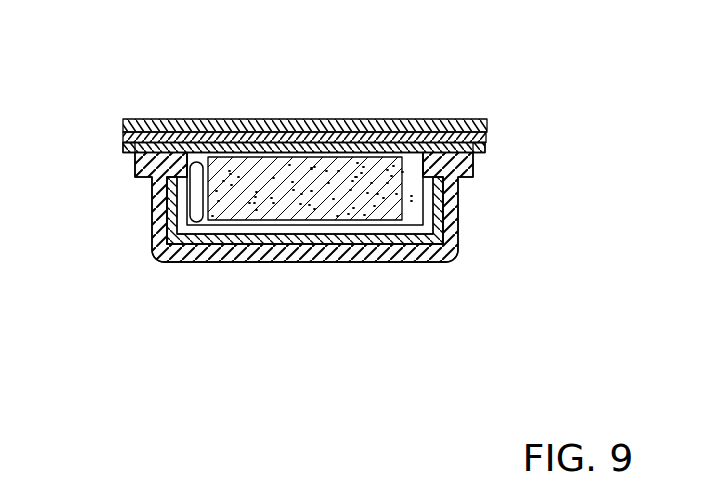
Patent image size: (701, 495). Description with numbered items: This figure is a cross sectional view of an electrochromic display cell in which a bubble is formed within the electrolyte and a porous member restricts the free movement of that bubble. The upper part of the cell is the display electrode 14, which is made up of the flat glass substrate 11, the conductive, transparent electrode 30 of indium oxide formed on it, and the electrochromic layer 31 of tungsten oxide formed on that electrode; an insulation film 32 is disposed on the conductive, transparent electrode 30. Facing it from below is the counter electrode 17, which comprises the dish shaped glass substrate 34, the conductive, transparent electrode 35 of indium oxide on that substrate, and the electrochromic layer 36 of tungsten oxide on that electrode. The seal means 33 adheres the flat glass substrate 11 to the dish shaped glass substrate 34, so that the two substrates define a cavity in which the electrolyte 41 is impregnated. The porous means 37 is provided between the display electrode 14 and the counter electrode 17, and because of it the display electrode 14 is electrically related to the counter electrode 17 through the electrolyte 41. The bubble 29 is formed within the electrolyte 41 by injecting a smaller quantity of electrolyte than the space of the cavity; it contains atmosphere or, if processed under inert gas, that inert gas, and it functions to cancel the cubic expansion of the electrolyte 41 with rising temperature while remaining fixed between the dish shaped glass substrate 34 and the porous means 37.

The display electrode 14 is at (305, 86).
The flat glass substrate 11 is at (203, 118).
The conductive, transparent electrode 30 is at (267, 140).
The electrochromic layer 31 is at (208, 66).
The insulation film 32 is at (123, 150).
The counter electrode 17 is at (354, 262).
The seal means 33 is at (475, 163).
The dish shaped glass substrate 34 is at (458, 210).
The conductive, transparent electrode 35 is at (457, 246).
The electrochromic layer 36 is at (330, 262).
The porous means 37 is at (258, 256).
The bubble 29 is at (195, 224).
The electrolyte 41 is at (410, 213).